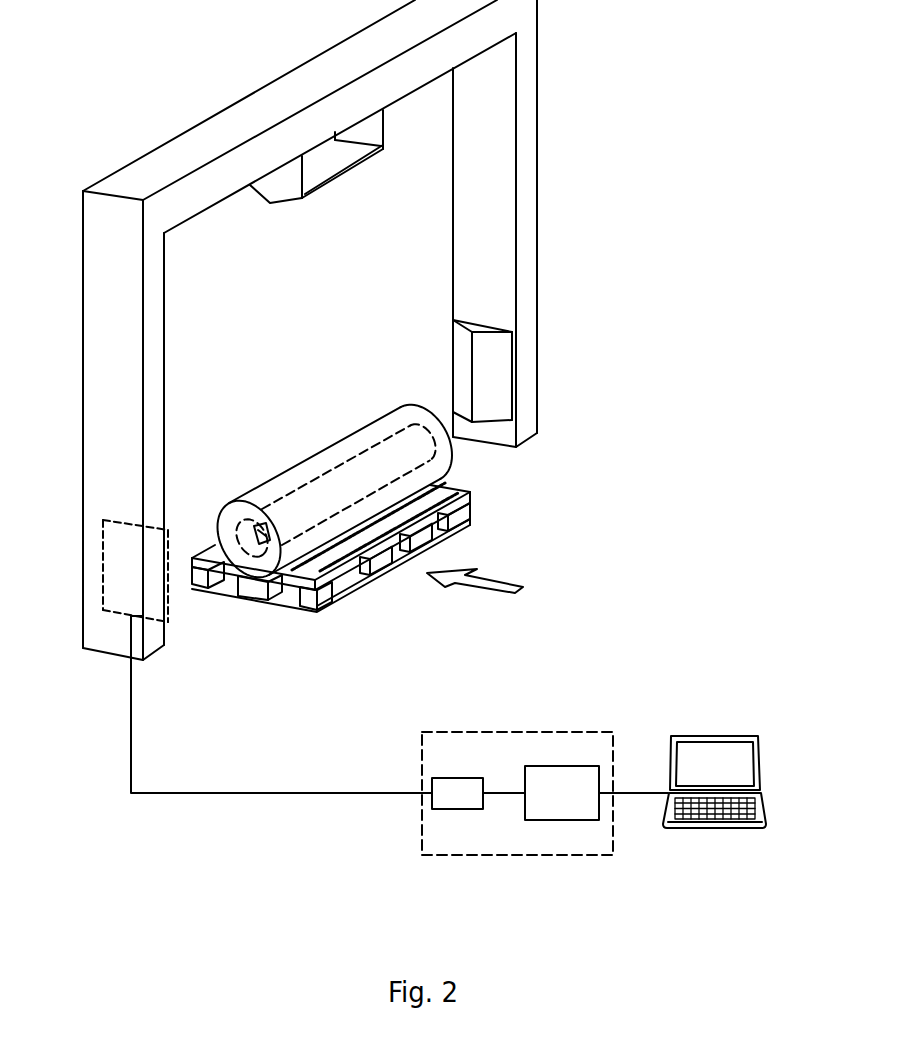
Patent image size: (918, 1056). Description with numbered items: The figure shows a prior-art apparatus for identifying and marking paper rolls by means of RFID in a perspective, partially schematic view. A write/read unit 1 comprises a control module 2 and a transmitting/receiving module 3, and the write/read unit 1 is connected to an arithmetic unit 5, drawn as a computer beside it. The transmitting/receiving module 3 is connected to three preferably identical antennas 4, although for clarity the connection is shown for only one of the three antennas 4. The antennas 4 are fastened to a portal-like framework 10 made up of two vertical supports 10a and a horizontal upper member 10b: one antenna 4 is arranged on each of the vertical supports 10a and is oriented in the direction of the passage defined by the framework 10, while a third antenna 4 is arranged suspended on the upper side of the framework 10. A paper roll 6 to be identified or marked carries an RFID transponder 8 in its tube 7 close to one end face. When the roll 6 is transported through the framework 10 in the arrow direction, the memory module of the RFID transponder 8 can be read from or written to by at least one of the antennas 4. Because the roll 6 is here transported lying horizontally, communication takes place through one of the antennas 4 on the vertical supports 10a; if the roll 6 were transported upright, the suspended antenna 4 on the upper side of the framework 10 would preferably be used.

The portal-like framework 10 is at (405, 330).
The vertical supports 10a is at (540, 203).
The horizontal crossbeam of portal 10b is at (283, 78).
The antennas 4 is at (340, 176).
The paper roll 6 is at (317, 450).
The tube 7 is at (378, 445).
The RFID transponder 8 is at (266, 522).
The write/read unit 1 is at (524, 769).
The control module 2 is at (562, 765).
The transmitting/receiving module 3 is at (458, 777).
The arithmetic unit 5 is at (713, 735).